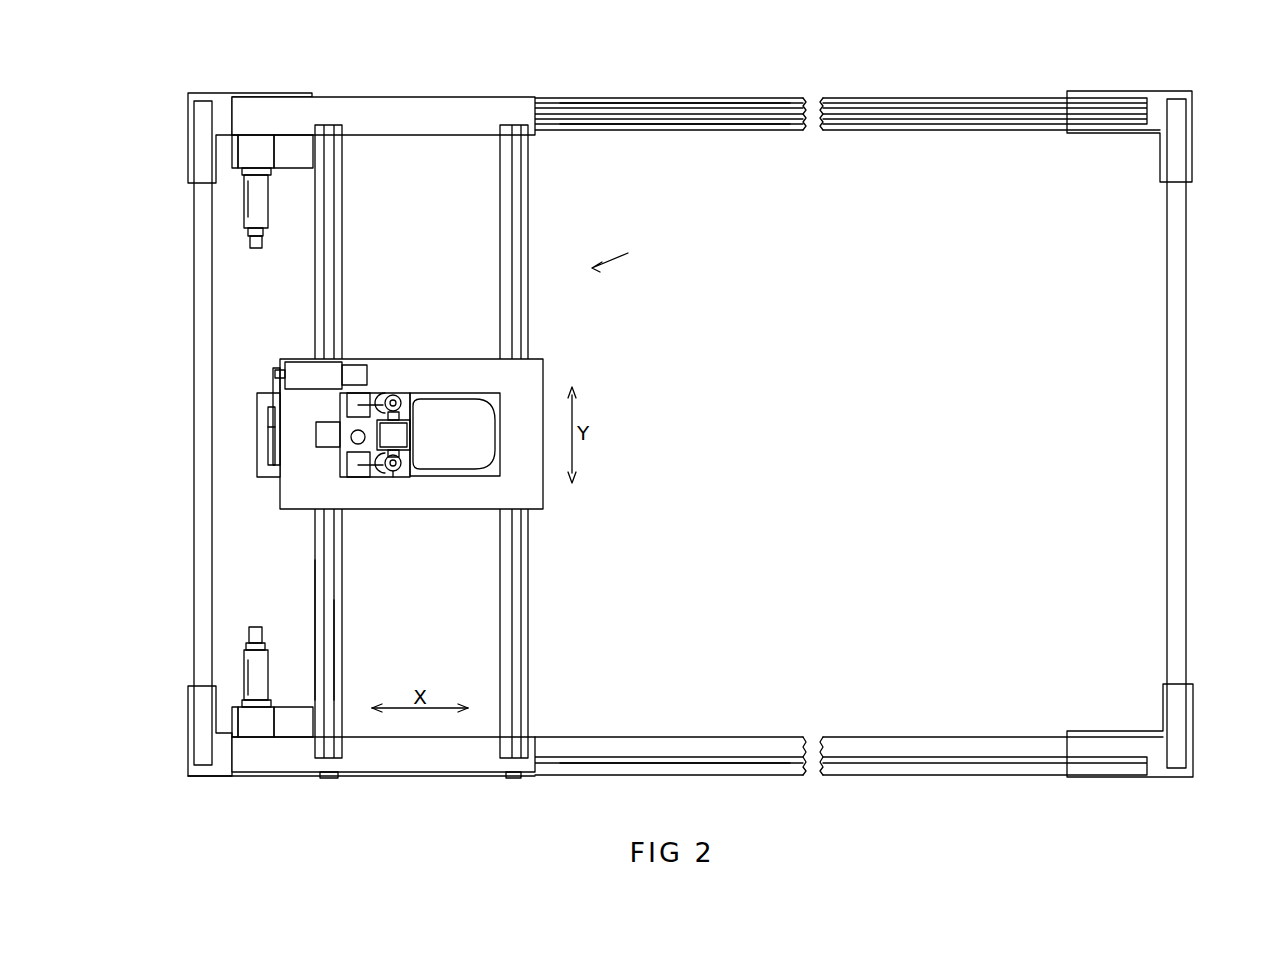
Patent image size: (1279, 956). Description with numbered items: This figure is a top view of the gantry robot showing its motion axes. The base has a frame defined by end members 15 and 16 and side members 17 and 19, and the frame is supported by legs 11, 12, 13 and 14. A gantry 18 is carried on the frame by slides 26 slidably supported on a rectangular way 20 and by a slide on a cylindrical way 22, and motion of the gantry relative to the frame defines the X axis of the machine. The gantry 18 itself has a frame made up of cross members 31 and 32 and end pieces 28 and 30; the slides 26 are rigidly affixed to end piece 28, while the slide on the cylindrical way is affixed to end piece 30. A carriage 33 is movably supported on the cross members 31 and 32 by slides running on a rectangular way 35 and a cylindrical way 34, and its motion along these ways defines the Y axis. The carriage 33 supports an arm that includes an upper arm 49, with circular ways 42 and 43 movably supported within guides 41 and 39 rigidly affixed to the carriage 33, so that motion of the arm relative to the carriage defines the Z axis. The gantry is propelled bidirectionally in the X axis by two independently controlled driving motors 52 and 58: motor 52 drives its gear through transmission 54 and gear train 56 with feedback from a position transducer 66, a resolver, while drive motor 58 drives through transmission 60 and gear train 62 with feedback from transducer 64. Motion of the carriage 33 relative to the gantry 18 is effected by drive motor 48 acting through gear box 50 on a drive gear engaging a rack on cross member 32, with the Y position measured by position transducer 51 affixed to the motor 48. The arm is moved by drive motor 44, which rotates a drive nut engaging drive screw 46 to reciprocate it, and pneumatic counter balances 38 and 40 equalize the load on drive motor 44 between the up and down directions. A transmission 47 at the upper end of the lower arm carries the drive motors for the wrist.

The leg 11 is at (1194, 712).
The leg 12 is at (188, 728).
The leg 13 is at (1194, 155).
The leg 14 is at (190, 164).
The end member 15 is at (1188, 380).
The end member 16 is at (214, 382).
The side member 17 is at (592, 737).
The gantry 18 is at (620, 255).
The side member 19 is at (672, 98).
The rectangular way 20 is at (598, 775).
The cylindrical way 22 is at (590, 103).
The slides 26 is at (325, 778).
The end piece 28 is at (378, 737).
The end piece 30 is at (400, 97).
The cross member 31 is at (500, 215).
The cross member 32 is at (343, 620).
The carriage 33 is at (473, 509).
The cylindrical way 34 is at (336, 645).
The rectangular way 35 is at (530, 193).
The pneumatic counter balance 38 is at (352, 477).
The guide 39 is at (388, 477).
The pneumatic counter balance 40 is at (347, 405).
The guide 41 is at (376, 393).
The circular way 42 is at (402, 397).
The circular way 43 is at (402, 468).
The drive motor 44 is at (337, 450).
The drive screw 46 is at (352, 443).
The transmission 47 is at (432, 448).
The drive motor 48 is at (322, 390).
The upper arm 49 is at (384, 446).
The gear box 50 is at (257, 440).
The position transducer 51 is at (353, 365).
The driving motor 52 is at (268, 210).
The transmission 54 is at (246, 164).
The gear train 56 is at (283, 164).
The drive motor 58 is at (268, 660).
The transmission 60 is at (246, 733).
The gear train 62 is at (283, 733).
The transducer 64 is at (256, 626).
The position transducer 66 is at (255, 249).